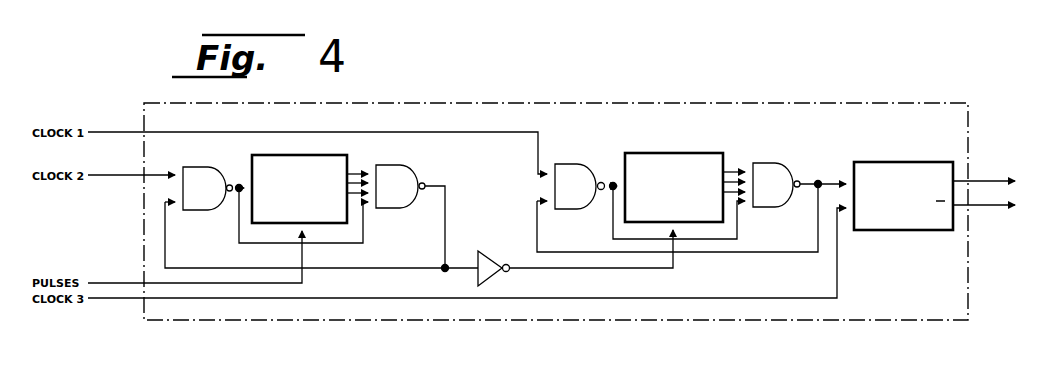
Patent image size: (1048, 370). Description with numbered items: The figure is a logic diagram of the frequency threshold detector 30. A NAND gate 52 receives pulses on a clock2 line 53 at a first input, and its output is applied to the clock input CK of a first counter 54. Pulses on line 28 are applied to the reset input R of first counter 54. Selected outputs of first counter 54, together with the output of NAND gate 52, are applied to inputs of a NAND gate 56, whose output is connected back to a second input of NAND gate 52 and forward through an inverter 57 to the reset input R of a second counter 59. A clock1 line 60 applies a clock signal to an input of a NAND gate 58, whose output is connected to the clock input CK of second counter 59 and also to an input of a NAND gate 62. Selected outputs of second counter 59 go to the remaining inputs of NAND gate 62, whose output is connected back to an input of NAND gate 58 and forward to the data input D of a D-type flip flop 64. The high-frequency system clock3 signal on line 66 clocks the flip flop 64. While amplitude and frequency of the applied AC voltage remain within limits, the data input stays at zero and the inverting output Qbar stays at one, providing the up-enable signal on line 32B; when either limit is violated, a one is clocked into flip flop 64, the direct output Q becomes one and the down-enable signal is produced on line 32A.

The frequency threshold detector 30 is at (682, 103).
The clock1 line 60 is at (120, 132).
The clock2 line 53 is at (121, 174).
The line 28 is at (120, 281).
The line 66 is at (120, 300).
The NAND gate 52 is at (216, 168).
The first counter 54 is at (348, 158).
The NAND gate 56 is at (415, 165).
The inverter 57 is at (493, 250).
The NAND gate 58 is at (570, 163).
The second counter 59 is at (673, 152).
The NAND gate 62 is at (767, 162).
The D-type flip flop 64 is at (893, 162).
The line 32A is at (1021, 178).
The line 32B is at (1021, 208).